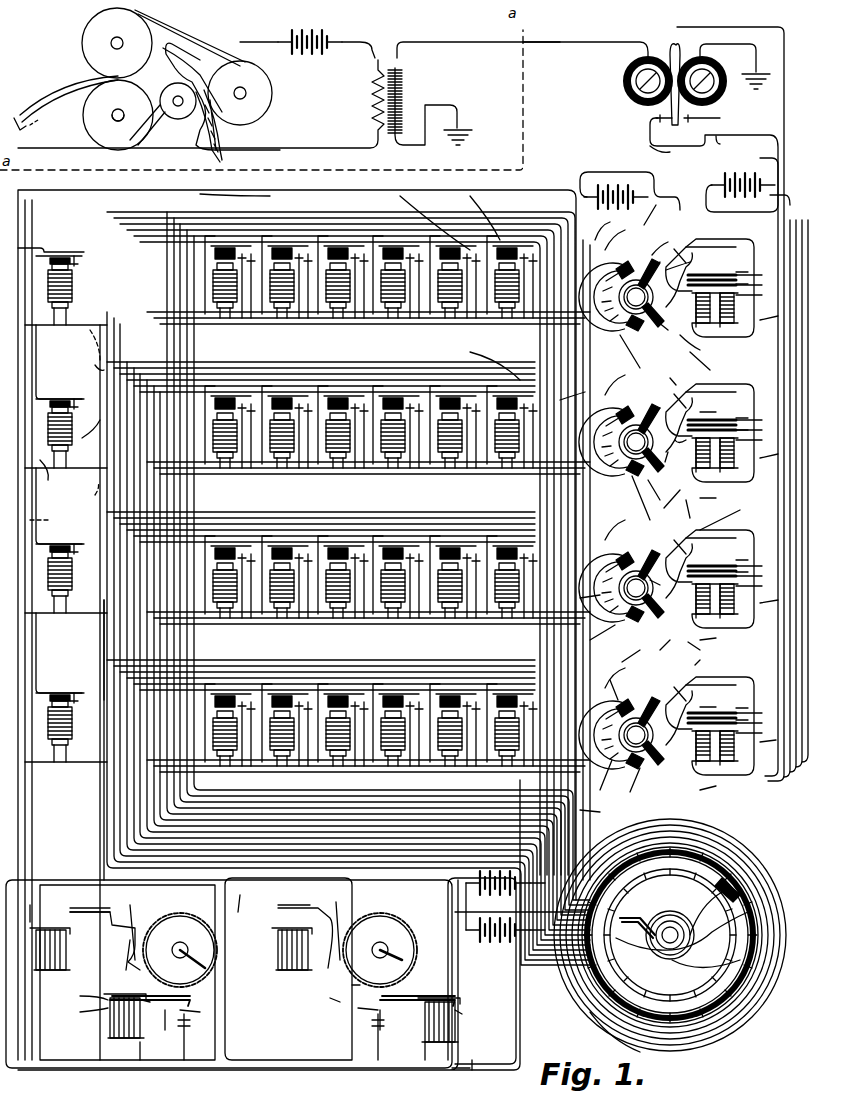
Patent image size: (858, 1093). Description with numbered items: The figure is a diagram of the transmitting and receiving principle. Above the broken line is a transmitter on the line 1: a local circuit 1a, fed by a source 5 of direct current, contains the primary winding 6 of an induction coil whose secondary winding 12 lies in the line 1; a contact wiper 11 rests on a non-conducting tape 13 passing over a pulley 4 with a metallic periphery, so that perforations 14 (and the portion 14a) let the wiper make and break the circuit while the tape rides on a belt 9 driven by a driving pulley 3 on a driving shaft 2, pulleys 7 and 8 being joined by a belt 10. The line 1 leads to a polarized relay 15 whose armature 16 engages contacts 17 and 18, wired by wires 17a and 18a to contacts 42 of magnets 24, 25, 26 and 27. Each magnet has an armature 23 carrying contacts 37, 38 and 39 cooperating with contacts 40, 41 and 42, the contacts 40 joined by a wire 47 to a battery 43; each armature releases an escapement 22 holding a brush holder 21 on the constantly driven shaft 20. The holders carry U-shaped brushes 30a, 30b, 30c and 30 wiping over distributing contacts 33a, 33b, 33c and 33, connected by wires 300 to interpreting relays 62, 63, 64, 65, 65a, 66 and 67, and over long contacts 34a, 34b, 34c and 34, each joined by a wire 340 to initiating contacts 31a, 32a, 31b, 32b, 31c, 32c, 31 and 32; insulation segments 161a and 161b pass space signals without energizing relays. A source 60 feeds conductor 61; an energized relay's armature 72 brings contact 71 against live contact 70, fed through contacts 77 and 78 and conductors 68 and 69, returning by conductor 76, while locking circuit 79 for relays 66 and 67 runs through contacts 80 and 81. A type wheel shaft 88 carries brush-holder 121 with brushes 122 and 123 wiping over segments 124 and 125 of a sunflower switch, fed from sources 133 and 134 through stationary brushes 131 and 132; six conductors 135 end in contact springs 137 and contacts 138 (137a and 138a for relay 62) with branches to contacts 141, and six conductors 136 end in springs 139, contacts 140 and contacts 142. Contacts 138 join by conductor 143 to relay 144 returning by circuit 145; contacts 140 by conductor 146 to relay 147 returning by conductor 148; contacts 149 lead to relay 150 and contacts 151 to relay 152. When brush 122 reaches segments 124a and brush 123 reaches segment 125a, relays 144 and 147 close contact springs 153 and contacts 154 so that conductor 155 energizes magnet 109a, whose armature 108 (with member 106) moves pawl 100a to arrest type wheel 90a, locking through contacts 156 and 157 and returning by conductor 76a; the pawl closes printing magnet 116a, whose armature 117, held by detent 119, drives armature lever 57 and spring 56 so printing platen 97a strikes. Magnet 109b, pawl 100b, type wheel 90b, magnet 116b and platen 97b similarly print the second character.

The line 1 is at (565, 40).
The local circuit 1a is at (380, 40).
The driving shaft 2 is at (114, 110).
The driving pulley 3 is at (83, 124).
The pulley 4 is at (184, 120).
The source of direct current 5 is at (305, 42).
The primary winding 6 is at (370, 96).
The pulley 7 is at (82, 28).
The pulley 8 is at (272, 93).
The belt 9 is at (150, 140).
The belt 10 is at (175, 20).
The contact wiper 11 is at (182, 70).
The secondary winding 12 is at (405, 75).
The tape 13 is at (90, 80).
The perforations 14 is at (40, 96).
The tape lower edge 14a is at (36, 125).
The polarized relay 15 is at (626, 96).
The armature 16 is at (668, 44).
The contact 17 is at (690, 118).
The wire 17a is at (722, 136).
The contact 18 is at (650, 122).
The wire 18a is at (660, 157).
The shaft 20 is at (653, 531).
The brush holder 21 is at (662, 495).
The escapement 22 is at (690, 262).
The armature 23 is at (724, 529).
The magnet 24 is at (700, 350).
The magnet 25 is at (719, 498).
The magnet 26 is at (718, 638).
The magnet 27 is at (718, 787).
The brush 30 is at (652, 710).
The brush 30a is at (668, 335).
The brush 30b is at (610, 400).
The brush 30c is at (680, 560).
The initiating contact 31 is at (606, 670).
The initiating contact 31a is at (650, 228).
The initiating contact 31b is at (630, 400).
The initiating contact 31c is at (612, 525).
The initiating contact 32 is at (604, 683).
The initiating contact 32a is at (653, 256).
The initiating contact 32b is at (653, 407).
The initiating contact 32c is at (664, 587).
The distributing contacts 33 is at (595, 781).
The distributing contacts 33a is at (638, 358).
The distributing contacts 33b is at (647, 504).
The distributing contacts 33c is at (572, 599).
The long contact 34 is at (626, 785).
The long contact 34a is at (669, 241).
The long contact 34b is at (661, 497).
The long contact 34c is at (585, 636).
The contact 37 is at (798, 228).
The contact 38 is at (696, 524).
The contact 39 is at (667, 555).
The contact 40 is at (749, 484).
The contact 41 is at (752, 498).
The contact 42 is at (778, 530).
The battery 43 is at (718, 172).
The wire 47 is at (786, 205).
The spring 56 is at (466, 1012).
The armature lever 57 is at (388, 1030).
The source 60 is at (624, 185).
The conductor 61 is at (668, 188).
The interpreting relay 62 is at (440, 348).
The interpreting relay 63 is at (498, 356).
The interpreting relay 64 is at (362, 342).
The interpreting relay 65 is at (495, 492).
The interpreting relay 65a is at (280, 478).
The interpreting relay 66 is at (462, 628).
The interpreting relay 67 is at (380, 774).
The conductor 68 is at (120, 1072).
The conductor 69 is at (104, 650).
The contact 70 is at (320, 345).
The contact 71 is at (330, 348).
The armature 72 is at (205, 262).
The conductor 76 is at (112, 226).
The conductor 76a is at (245, 1075).
The contact 77 is at (192, 1022).
The contact spring 78 is at (208, 1007).
The locking circuit 79 is at (100, 812).
The contact 80 is at (372, 1022).
The contact 81 is at (358, 1005).
The type wheel shaft 88 is at (418, 946).
The type wheel 90a is at (212, 920).
The type wheel 90b is at (412, 920).
The printing platen 97a is at (195, 998).
The printing platen 97b is at (390, 994).
The pawl 100a is at (132, 974).
The pawl 100b is at (336, 970).
The lever 106 is at (124, 925).
The armature 108 is at (270, 940).
The magnet 109a is at (70, 950).
The magnet 109b is at (290, 972).
The printing magnet 116a is at (108, 1030).
The printing magnet 116b is at (458, 1035).
The armature 117 is at (270, 1004).
The detent 119 is at (77, 1013).
The brush-holder 121 is at (708, 892).
The brush 122 is at (752, 840).
The brush 123 is at (788, 880).
The contact segments 124 is at (750, 1018).
The sunflower segments 124a is at (740, 1062).
The contact segments 125 is at (732, 978).
The sunflower segment 125a is at (620, 1052).
The stationary brush 131 is at (656, 935).
The stationary brush 132 is at (658, 912).
The source 133 is at (466, 915).
The source 134 is at (480, 893).
The conductors 135 is at (490, 820).
The conductors 136 is at (270, 776).
The contact spring 137 is at (505, 266).
The contact 137a is at (430, 200).
The companion contact 138 is at (512, 230).
The contact 138a is at (490, 196).
The contact spring 139 is at (528, 420).
The companion contact 140 is at (548, 492).
The contact 141 is at (360, 530).
The contact 142 is at (505, 760).
The common conductor 143 is at (82, 330).
The relay 144 is at (100, 355).
The return circuit 145 is at (80, 480).
The conductor 146 is at (92, 495).
The relay 147 is at (90, 444).
The return conductor 148 is at (30, 520).
The contacts 149 is at (388, 628).
The relay 150 is at (72, 578).
The contacts 151 is at (200, 778).
The relay 152 is at (70, 725).
The contact spring 153 is at (90, 402).
The companion contact 154 is at (75, 425).
The conductor 155 is at (310, 194).
The contact 156 is at (288, 898).
The contact 157 is at (228, 910).
The insulation segment 161a is at (615, 229).
The insulation segment 161b is at (570, 402).
The wires 300 is at (470, 352).
The wire 340 is at (657, 586).